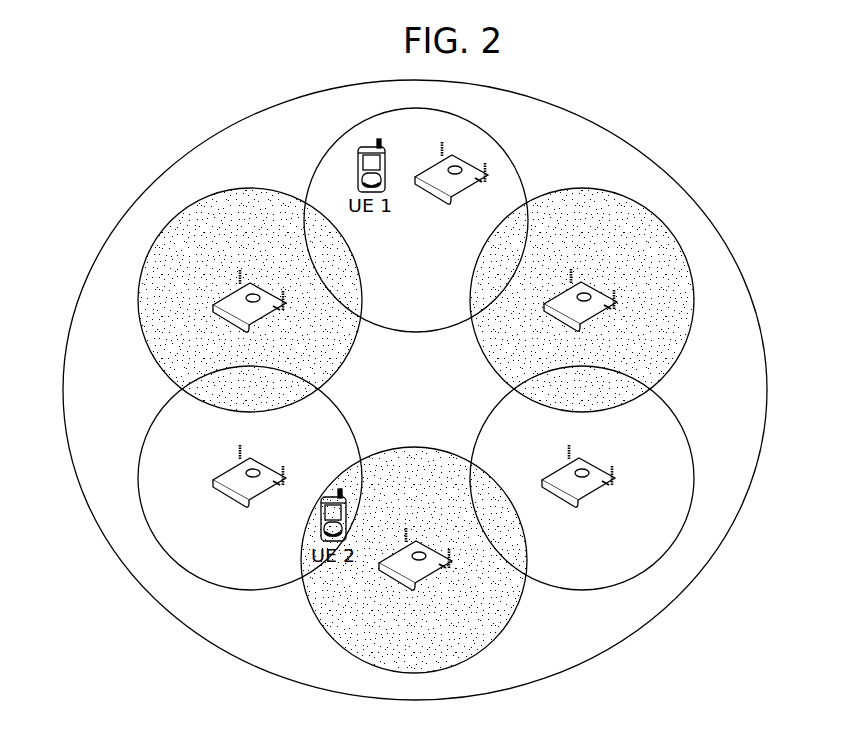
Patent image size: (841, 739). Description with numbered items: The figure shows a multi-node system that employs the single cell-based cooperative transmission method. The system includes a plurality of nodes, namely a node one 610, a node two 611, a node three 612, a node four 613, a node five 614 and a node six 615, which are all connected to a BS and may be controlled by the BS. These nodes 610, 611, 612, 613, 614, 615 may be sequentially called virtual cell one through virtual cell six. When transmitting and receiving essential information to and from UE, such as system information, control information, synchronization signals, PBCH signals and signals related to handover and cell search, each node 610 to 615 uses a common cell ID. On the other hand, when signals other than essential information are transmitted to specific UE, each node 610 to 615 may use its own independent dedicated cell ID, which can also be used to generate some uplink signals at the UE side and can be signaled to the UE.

The node 1 610 is at (227, 295).
The node 2 611 is at (467, 162).
The node 3 612 is at (592, 318).
The node 4 613 is at (582, 500).
The node 5 614 is at (425, 585).
The node 6 615 is at (228, 500).